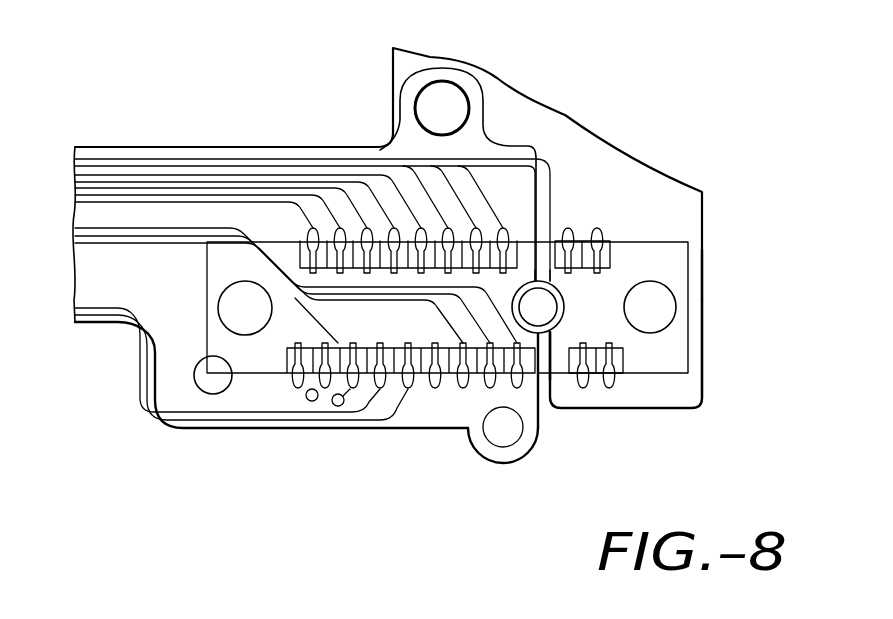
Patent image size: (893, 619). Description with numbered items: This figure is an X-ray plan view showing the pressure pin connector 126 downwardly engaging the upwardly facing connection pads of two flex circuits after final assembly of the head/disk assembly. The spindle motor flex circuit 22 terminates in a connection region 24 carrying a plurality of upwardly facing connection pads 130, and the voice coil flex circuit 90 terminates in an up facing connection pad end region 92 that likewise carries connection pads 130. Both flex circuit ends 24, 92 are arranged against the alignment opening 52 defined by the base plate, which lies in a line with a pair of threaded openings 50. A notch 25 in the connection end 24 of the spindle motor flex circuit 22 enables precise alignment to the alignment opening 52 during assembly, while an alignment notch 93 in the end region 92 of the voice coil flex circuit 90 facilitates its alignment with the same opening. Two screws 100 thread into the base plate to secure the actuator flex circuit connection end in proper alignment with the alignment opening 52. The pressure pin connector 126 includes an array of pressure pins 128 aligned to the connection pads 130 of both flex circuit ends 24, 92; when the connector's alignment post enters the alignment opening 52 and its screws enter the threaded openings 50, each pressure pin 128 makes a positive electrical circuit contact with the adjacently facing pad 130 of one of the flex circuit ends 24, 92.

The spindle motor flex circuit 22 is at (565, 115).
The connection region 24 is at (665, 392).
The notch 25 is at (562, 305).
The threaded openings 50 is at (246, 318).
The alignment opening 52 is at (545, 313).
The voice coil flex circuit 90 is at (143, 213).
The connection pad end region 92 is at (452, 413).
The alignment notch 93 is at (532, 277).
The screws 100 is at (503, 430).
The pressure pin connector 126 is at (703, 268).
The pressure pins 128 is at (595, 228).
The connection pads 130 is at (608, 241).